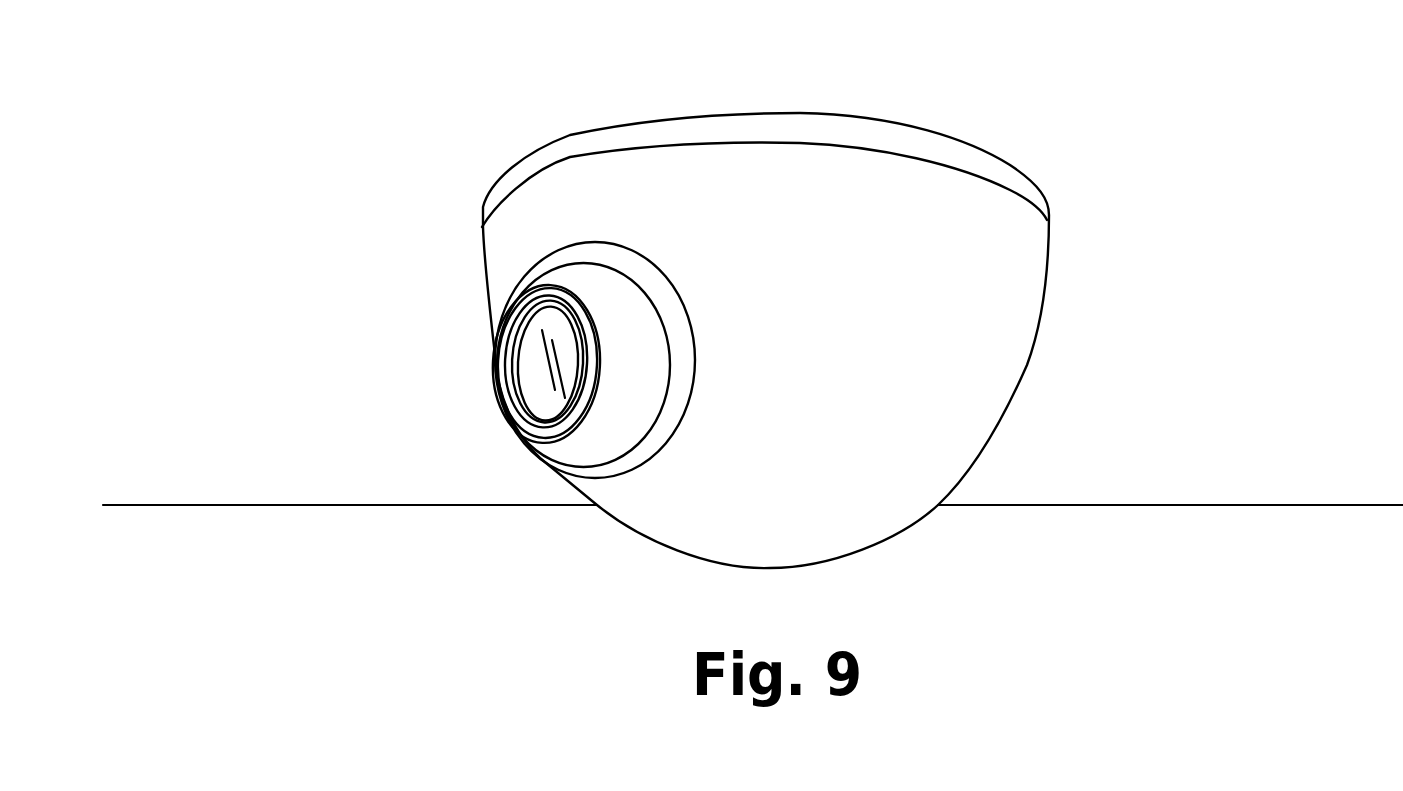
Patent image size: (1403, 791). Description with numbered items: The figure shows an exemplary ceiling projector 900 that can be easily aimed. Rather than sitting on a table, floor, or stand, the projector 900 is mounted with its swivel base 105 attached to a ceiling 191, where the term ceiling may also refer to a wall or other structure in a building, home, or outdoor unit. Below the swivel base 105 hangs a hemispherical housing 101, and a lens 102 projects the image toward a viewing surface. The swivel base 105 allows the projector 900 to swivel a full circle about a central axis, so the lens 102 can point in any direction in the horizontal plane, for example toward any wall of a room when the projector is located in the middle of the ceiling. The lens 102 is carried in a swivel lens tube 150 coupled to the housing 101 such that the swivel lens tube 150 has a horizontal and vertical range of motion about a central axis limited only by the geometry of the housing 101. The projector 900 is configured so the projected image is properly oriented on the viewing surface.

The hemispherical housing 101 is at (992, 365).
The swivel base 105 is at (938, 147).
The lens 102 is at (542, 365).
The swivel lens tube 150 is at (607, 443).
The ceiling 191 is at (410, 298).
The ceiling projector 900 is at (1116, 241).